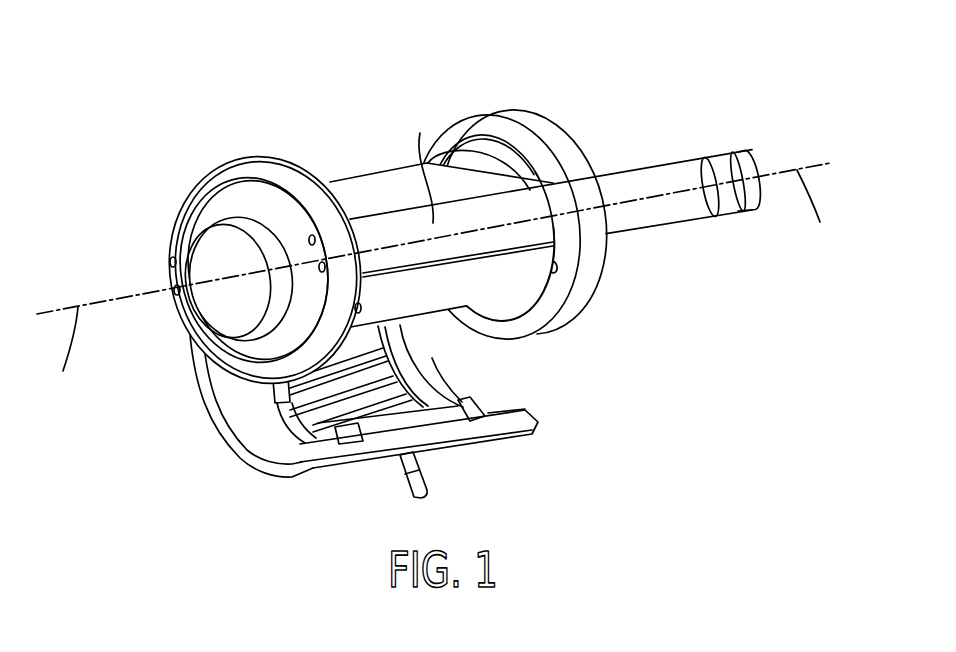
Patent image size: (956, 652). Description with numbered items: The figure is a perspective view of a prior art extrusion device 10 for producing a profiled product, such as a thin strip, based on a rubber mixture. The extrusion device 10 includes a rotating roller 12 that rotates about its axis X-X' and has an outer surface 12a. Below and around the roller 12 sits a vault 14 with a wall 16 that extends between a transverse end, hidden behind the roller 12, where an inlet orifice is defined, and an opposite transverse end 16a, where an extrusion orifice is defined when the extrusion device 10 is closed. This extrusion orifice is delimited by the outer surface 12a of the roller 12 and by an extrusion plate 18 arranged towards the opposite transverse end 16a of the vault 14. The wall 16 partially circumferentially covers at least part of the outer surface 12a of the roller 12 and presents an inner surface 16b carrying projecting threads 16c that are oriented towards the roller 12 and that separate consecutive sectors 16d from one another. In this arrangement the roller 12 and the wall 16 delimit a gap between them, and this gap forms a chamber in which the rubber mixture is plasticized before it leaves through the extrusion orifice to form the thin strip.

The extrusion device 10 is at (435, 272).
The rotating roller 12 is at (353, 234).
The outer surface 12a is at (363, 177).
The vault 14 is at (367, 431).
The wall 16 is at (434, 386).
The opposite transverse end 16a is at (456, 428).
The inner surface 16b is at (273, 383).
The projecting threads 16c is at (310, 402).
The sectors 16d is at (313, 405).
The extrusion plate 18 is at (387, 431).